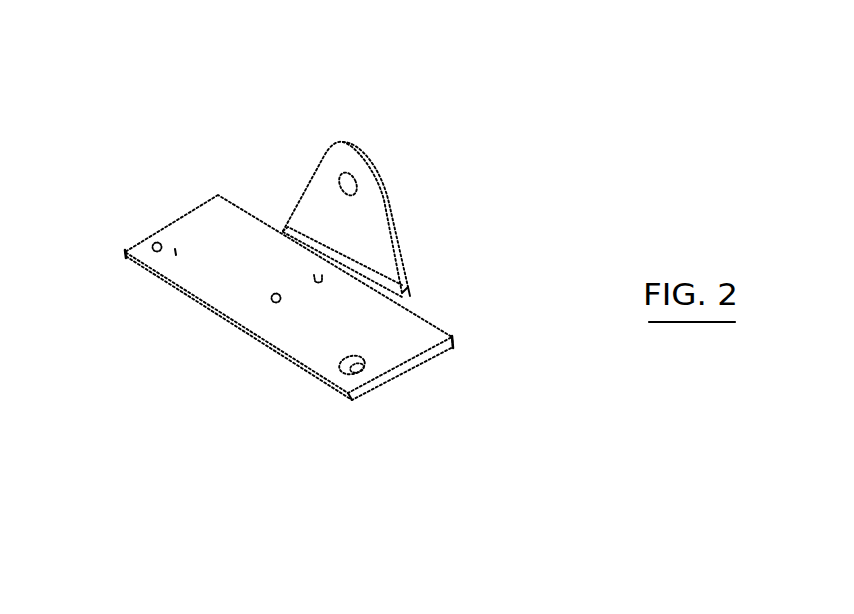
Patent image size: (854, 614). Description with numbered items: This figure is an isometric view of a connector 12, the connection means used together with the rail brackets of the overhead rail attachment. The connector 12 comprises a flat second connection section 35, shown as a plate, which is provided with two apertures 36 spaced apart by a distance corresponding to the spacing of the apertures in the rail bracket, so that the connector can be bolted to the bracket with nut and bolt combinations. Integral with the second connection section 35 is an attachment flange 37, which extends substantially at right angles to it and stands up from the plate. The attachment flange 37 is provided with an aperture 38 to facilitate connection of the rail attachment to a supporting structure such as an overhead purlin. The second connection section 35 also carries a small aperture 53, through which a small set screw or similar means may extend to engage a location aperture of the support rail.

The connector 12 is at (523, 100).
The second connection section 35 is at (236, 327).
The apertures 36 is at (161, 250).
The attachment flange 37 is at (392, 220).
The aperture 38 is at (350, 184).
The small apertures 53 is at (276, 300).